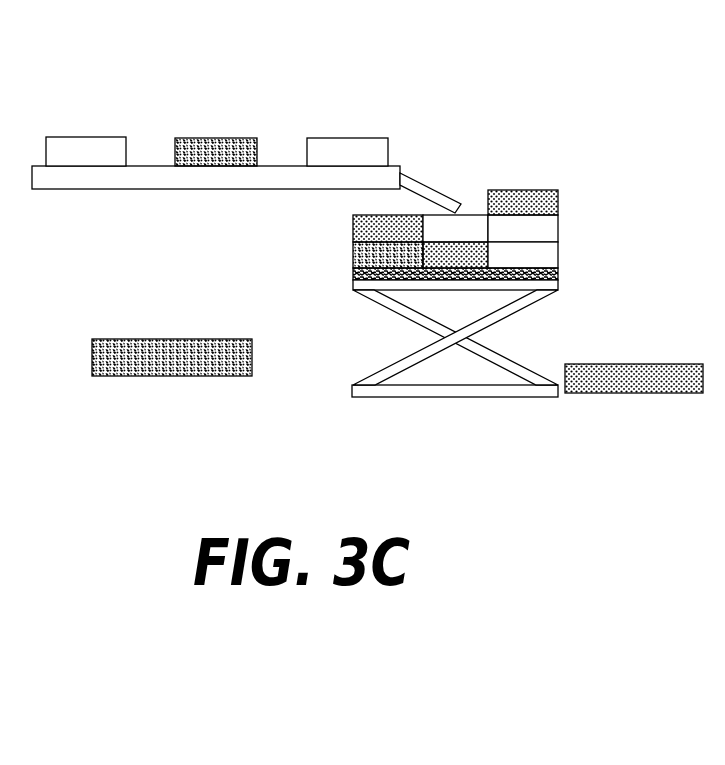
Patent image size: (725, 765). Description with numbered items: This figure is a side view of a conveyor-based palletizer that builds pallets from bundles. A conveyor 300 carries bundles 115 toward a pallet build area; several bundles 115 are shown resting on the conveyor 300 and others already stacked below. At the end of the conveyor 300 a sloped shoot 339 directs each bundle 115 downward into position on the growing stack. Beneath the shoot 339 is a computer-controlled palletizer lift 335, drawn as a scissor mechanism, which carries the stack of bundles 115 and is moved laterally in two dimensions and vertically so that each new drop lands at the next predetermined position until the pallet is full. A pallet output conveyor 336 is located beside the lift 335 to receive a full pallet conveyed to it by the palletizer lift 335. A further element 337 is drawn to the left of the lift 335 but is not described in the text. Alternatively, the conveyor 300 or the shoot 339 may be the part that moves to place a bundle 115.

The bundle 115 is at (328, 138).
The conveyor 300 is at (88, 190).
The palletizer lift 335 is at (398, 396).
The pallet output conveyor 336 is at (622, 394).
The component 337 is at (217, 377).
The shoot 339 is at (430, 187).